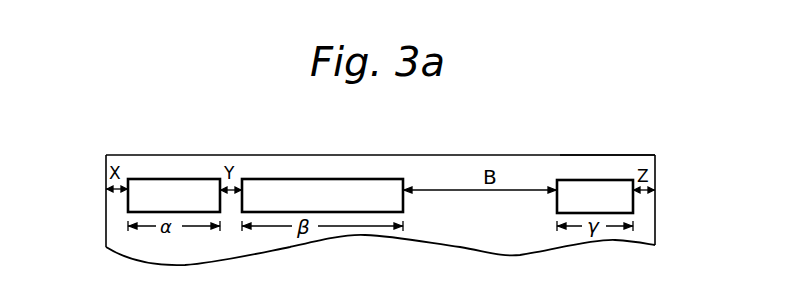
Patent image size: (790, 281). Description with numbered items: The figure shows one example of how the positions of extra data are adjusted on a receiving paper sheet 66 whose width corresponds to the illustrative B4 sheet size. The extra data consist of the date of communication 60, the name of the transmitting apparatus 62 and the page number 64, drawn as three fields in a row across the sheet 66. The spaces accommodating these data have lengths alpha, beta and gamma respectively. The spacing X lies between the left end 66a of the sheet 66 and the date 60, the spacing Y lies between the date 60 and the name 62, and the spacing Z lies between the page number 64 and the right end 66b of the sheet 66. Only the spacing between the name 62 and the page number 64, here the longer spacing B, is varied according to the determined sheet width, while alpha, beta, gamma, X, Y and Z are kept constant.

The date of communication 60 is at (160, 178).
The name of transmitting apparatus 62 is at (290, 178).
The page number 64 is at (575, 180).
The sheet 66 is at (478, 155).
The left end of the sheet 66a is at (106, 163).
The right end of the sheet 66b is at (657, 177).
The B4 sheet size B4 is at (628, 155).